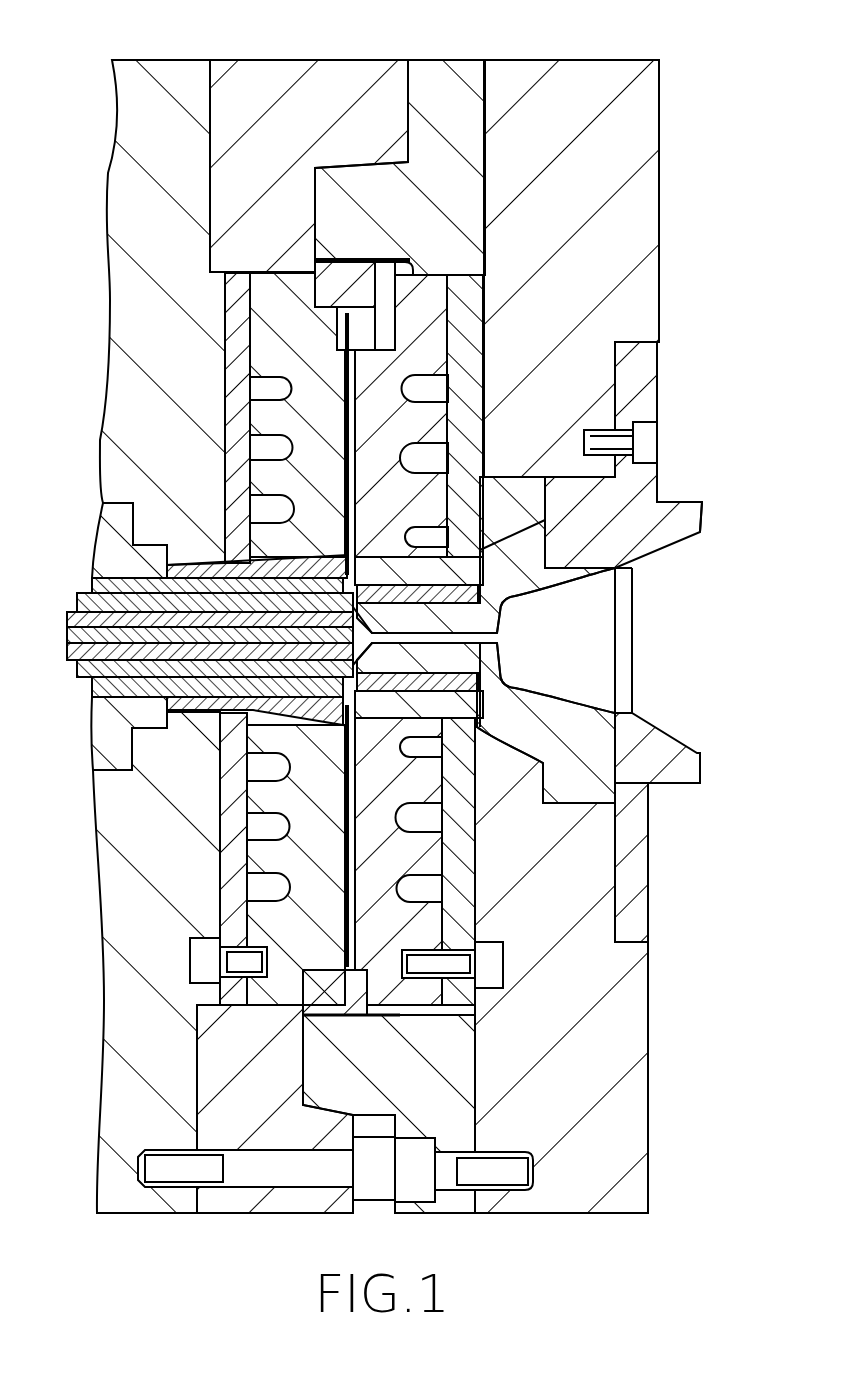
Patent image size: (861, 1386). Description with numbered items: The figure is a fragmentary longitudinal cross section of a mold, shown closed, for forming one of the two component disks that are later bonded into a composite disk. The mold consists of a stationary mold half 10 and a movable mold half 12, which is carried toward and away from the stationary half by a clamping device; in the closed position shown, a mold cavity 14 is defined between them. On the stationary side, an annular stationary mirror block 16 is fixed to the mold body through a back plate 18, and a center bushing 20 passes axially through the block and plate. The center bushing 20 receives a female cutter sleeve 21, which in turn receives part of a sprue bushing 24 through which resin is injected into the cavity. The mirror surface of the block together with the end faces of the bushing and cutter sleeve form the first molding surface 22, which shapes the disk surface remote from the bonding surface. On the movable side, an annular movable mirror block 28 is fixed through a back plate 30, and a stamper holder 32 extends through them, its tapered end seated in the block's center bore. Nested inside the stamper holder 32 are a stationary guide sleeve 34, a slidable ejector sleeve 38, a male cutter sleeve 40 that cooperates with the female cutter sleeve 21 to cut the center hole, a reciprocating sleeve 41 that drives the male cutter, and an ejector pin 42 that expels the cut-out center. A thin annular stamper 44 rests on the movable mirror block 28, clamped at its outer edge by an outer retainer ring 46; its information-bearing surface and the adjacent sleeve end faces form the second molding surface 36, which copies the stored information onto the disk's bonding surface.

The stationary mold half 10 is at (594, 44).
The movable mold half 12 is at (166, 48).
The mold cavity 14 is at (455, 418).
The stationary mirror block 16 is at (435, 350).
The back plate 18 is at (458, 903).
The center bushing 20 is at (477, 713).
The female cutter sleeve 21 is at (560, 597).
The first molding surface 22 is at (362, 860).
The sprue bushing 24 is at (567, 712).
The movable mirror block 28 is at (275, 343).
The back plate 30 is at (233, 863).
The stamper holder 32 is at (193, 708).
The stationary guide sleeve 34 is at (112, 528).
The second molding surface 36 is at (262, 550).
The ejector sleeve 38 is at (125, 585).
The male cutter sleeve 40 is at (92, 672).
The reciprocating sleeve 41 is at (92, 600).
The ejector pin 42 is at (67, 633).
The stamper 44 is at (350, 818).
The outer retainer ring 46 is at (352, 1003).